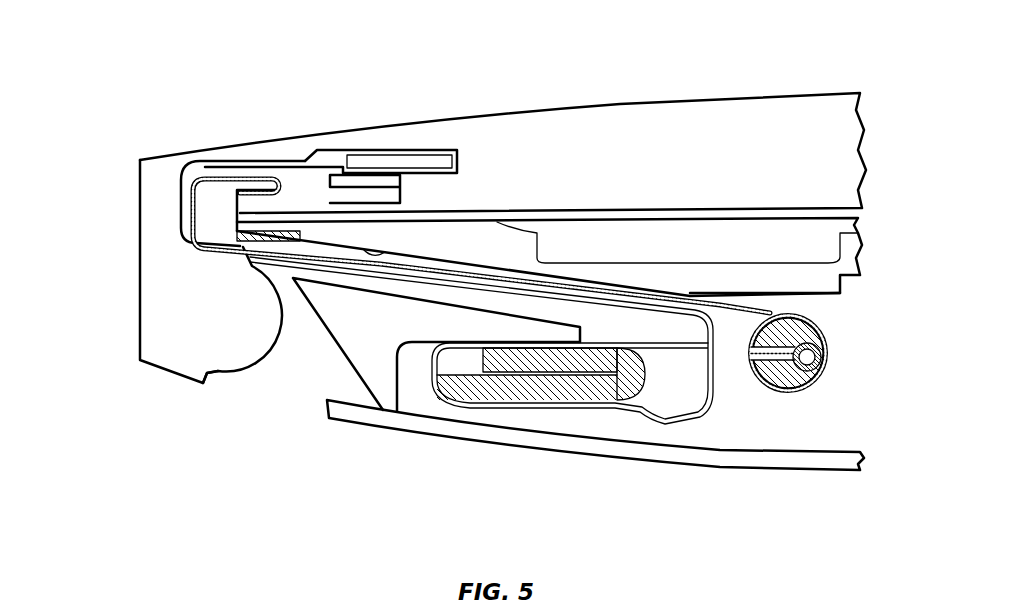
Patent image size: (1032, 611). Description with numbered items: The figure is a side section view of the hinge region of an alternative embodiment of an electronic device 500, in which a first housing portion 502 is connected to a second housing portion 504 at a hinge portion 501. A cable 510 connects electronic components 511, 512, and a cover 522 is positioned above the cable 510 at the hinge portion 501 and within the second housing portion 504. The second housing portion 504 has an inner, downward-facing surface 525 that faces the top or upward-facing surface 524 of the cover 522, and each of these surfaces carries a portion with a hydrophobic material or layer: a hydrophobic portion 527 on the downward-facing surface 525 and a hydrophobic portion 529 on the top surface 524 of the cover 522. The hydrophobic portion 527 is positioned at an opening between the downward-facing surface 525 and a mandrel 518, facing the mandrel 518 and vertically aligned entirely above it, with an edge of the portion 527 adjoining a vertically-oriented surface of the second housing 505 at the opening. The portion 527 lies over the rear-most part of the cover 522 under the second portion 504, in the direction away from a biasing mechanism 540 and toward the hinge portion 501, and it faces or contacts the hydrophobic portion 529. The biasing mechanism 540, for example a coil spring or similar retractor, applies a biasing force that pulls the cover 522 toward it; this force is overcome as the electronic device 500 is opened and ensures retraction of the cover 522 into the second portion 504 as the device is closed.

The electronic device 500 is at (545, 69).
The hinge portion 501 is at (203, 391).
The first housing portion 502 is at (660, 99).
The second housing portion 504 is at (394, 436).
The second housing 505 is at (517, 253).
The cable 510 is at (712, 396).
The electronic component 511 is at (423, 157).
The electronic component 512 is at (612, 360).
The mandrel 518 is at (220, 362).
The cover 522 is at (721, 303).
The top surface 524 is at (440, 272).
The downward-facing surface 525 is at (375, 253).
The hydrophobic portion 527 is at (260, 250).
The hydrophobic portion 529 is at (291, 243).
The biasing mechanism 540 is at (790, 372).